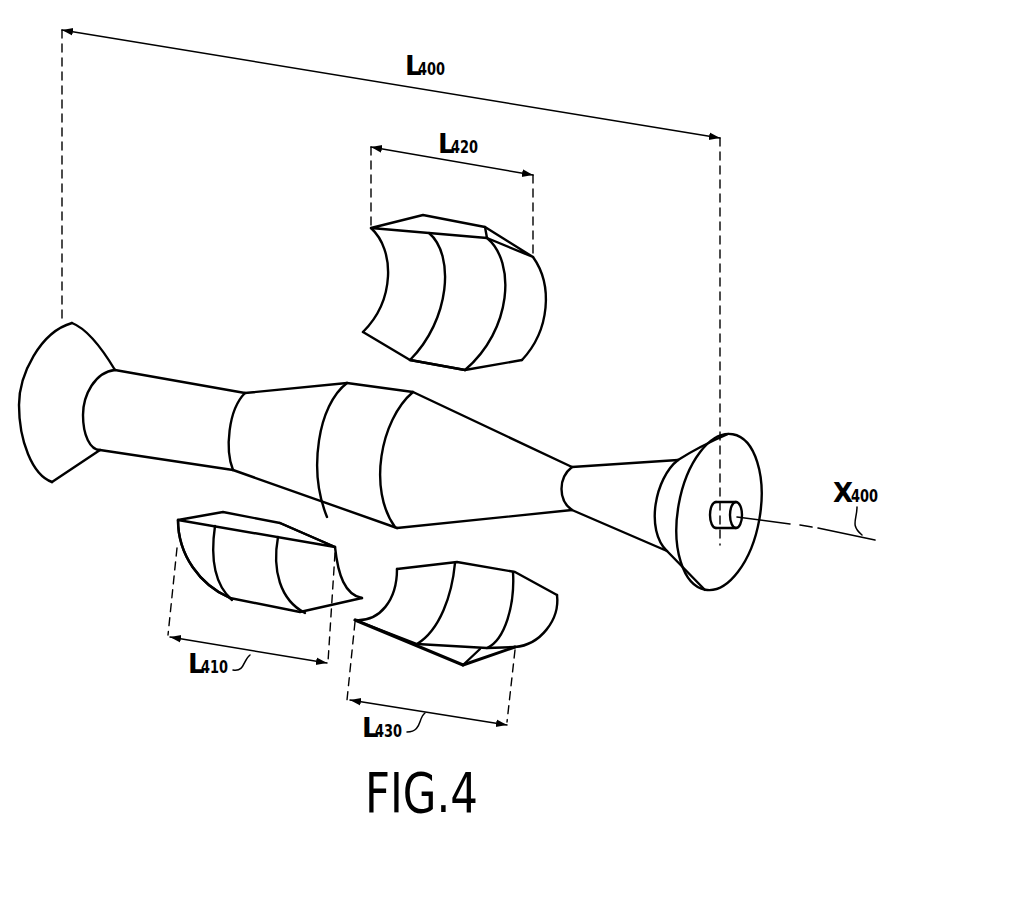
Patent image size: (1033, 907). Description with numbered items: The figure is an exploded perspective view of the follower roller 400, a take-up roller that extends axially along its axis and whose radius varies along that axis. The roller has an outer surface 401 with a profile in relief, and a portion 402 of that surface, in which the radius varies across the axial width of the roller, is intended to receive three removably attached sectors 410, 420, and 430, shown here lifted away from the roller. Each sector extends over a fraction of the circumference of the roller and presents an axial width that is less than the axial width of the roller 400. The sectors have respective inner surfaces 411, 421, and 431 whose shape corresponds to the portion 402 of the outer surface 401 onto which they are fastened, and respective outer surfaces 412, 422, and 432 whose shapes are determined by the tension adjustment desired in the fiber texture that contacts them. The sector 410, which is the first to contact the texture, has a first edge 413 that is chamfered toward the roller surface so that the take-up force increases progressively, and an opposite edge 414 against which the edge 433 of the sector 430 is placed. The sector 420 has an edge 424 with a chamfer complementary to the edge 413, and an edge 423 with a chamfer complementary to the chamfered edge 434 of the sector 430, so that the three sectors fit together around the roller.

The follower roller 400 is at (396, 460).
The outer surface 401 is at (285, 400).
The portion 402 is at (373, 393).
The sector 410 is at (252, 549).
The inner surface 411 is at (342, 555).
The outer surface 412 is at (193, 540).
The first edge 413 is at (238, 520).
The edge 414 is at (362, 598).
The sector 420 is at (484, 288).
The inner surface 421 is at (480, 310).
The outer surface 422 is at (508, 242).
The edge 423 is at (450, 368).
The edge 424 is at (453, 225).
The sector 430 is at (479, 605).
The inner surface 431 is at (478, 605).
The outer surface 432 is at (488, 658).
The edge 433 is at (428, 653).
The edge 434 is at (470, 562).